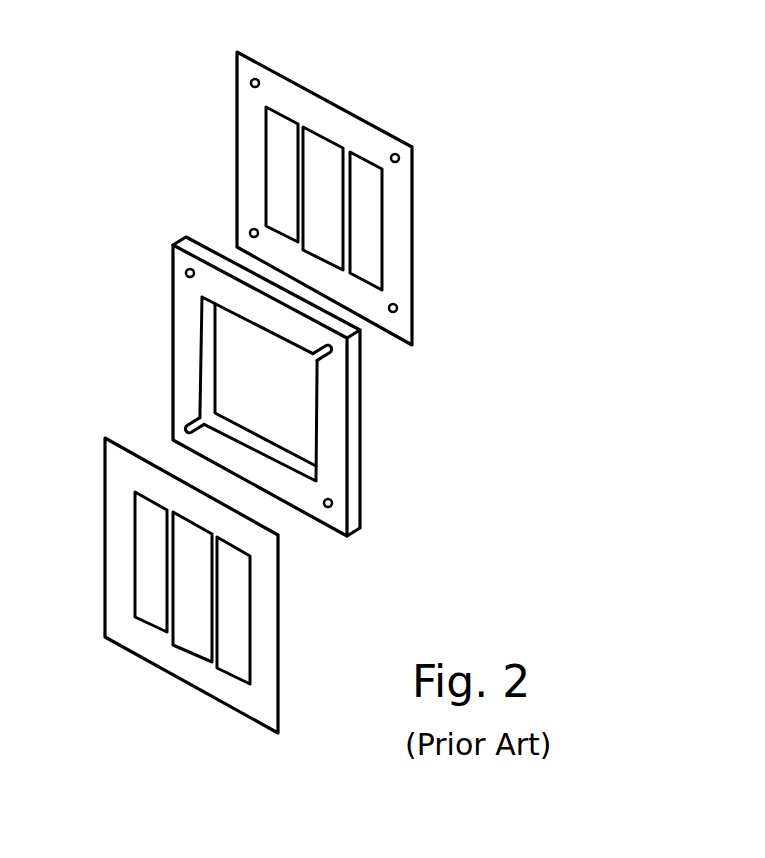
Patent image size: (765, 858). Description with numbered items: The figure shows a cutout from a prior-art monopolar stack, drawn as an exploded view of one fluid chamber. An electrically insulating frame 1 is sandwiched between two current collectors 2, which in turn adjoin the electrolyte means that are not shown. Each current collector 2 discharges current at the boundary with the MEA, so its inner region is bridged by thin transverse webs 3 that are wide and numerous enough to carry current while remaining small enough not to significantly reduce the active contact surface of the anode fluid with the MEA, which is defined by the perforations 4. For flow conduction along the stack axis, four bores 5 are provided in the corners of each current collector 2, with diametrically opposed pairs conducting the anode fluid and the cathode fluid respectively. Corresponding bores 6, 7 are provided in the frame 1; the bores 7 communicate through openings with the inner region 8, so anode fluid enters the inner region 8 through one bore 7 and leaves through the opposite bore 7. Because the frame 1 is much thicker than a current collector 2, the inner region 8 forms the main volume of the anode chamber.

The electrically insulating frame 1 is at (137, 340).
The current collector 2 is at (205, 147).
The transverse webs 3 is at (303, 207).
The perforations 4 is at (276, 166).
The bores 5 is at (250, 84).
The bores 6 is at (185, 274).
The bores 7 is at (183, 426).
The inner region 8 is at (255, 398).